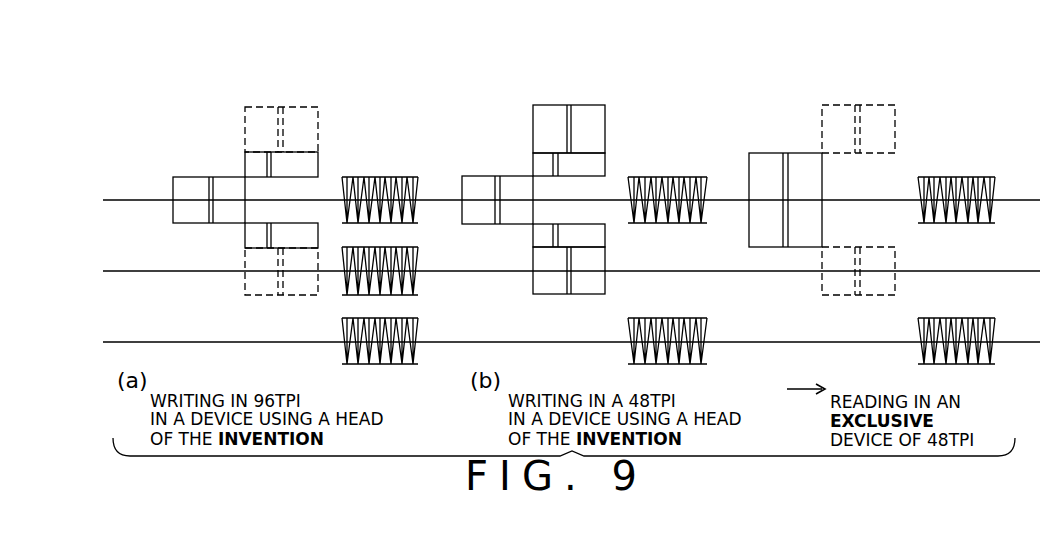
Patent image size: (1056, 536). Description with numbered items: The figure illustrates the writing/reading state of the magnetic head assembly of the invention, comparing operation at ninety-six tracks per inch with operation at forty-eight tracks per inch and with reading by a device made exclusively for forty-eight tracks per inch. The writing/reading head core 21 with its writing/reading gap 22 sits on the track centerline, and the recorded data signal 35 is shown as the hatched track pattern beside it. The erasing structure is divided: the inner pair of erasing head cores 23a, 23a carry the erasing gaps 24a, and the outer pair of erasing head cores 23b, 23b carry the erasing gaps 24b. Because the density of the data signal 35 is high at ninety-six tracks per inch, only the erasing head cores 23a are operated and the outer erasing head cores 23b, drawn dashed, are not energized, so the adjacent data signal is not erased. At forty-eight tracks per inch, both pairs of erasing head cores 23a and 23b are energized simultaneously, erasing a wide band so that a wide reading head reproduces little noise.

The writing/reading head core 21 is at (173, 190).
The writing/reading gap 22 is at (211, 177).
The erasing head core 23a is at (318, 158).
The erasing head core 23b is at (259, 106).
The erasing gap 24a is at (268, 160).
The erasing gap 24b is at (282, 106).
The record data signal 35 is at (380, 177).